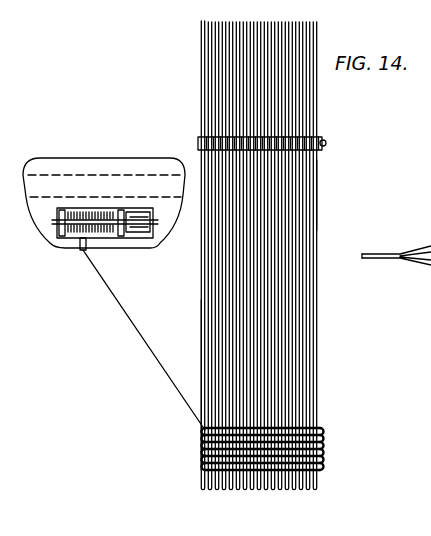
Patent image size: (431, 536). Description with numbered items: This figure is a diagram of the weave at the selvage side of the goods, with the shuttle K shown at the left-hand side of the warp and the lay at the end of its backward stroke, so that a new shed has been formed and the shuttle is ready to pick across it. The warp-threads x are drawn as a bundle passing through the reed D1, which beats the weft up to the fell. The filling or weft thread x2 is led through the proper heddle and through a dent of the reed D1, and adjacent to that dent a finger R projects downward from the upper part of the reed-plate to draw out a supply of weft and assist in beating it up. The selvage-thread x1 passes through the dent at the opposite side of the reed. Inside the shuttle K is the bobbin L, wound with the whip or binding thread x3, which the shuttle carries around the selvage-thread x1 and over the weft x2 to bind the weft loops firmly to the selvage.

The warp-threads x is at (211, 41).
The selvage-thread x1 is at (206, 268).
The filling or weft thread x2 is at (319, 190).
The whip or binding thread x3 is at (153, 349).
The reed D1 is at (200, 141).
The finger R is at (325, 146).
The shuttle K is at (113, 150).
The bobbin L is at (121, 239).